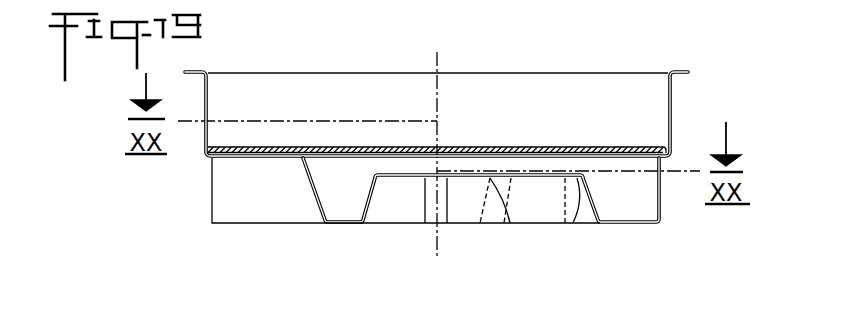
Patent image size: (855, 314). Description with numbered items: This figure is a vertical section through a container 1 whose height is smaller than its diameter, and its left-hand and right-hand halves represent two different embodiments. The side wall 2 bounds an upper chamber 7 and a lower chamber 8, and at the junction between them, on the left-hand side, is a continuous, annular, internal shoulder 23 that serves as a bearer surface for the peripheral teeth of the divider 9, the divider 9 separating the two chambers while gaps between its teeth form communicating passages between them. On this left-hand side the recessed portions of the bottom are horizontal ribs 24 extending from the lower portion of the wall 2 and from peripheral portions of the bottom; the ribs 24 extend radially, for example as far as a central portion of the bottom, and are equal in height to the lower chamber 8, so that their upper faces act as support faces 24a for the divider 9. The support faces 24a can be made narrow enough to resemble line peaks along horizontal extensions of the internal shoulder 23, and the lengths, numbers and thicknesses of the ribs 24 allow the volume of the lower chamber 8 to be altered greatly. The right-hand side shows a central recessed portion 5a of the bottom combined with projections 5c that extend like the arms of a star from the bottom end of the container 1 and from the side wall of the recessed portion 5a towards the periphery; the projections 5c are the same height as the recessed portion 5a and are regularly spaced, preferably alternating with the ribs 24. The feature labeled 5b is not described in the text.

The container 1 is at (691, 95).
The wall 2 is at (672, 126).
The upper chamber 7 is at (358, 105).
The lower chamber 8 is at (350, 185).
The divider 9 is at (473, 150).
The internal shoulder 23 is at (209, 160).
The ribs 24 is at (550, 161).
The support faces 24a is at (259, 142).
The recessed portion 5a is at (382, 211).
The horizontal wall 5b is at (411, 175).
The projections 5c is at (443, 214).